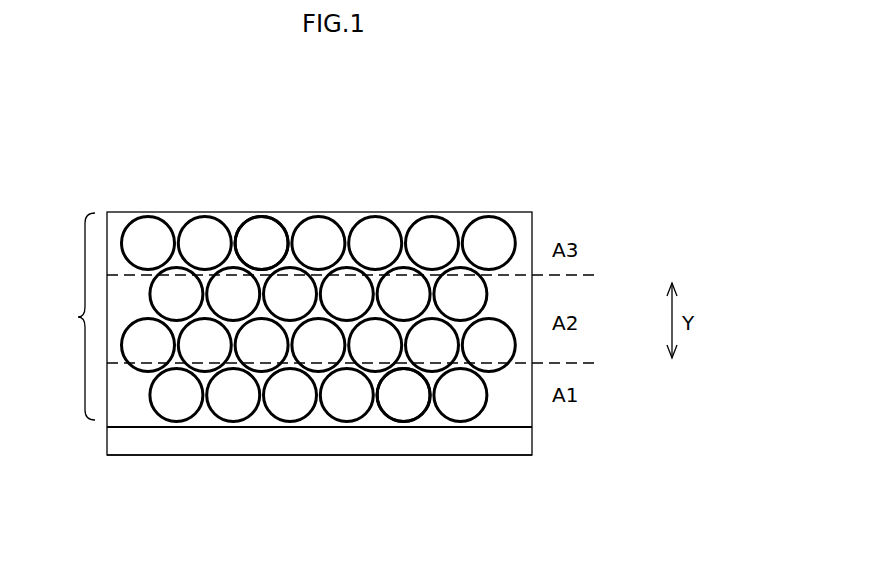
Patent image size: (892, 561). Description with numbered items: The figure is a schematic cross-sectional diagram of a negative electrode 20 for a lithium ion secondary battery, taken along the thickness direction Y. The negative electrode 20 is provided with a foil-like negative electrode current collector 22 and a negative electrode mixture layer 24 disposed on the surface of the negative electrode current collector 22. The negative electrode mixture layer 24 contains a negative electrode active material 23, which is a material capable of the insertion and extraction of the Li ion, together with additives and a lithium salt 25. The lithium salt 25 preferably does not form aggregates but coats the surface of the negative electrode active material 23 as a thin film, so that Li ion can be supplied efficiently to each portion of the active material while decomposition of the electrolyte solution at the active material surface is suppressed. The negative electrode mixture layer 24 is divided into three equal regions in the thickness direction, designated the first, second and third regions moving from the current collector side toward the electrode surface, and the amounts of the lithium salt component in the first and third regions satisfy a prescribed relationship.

The negative electrode 20 is at (577, 152).
The negative electrode current collector 22 is at (527, 445).
The negative electrode active material 23 is at (148, 227).
The negative electrode mixture layer 24 is at (70, 316).
The lithium salt 25 is at (255, 218).